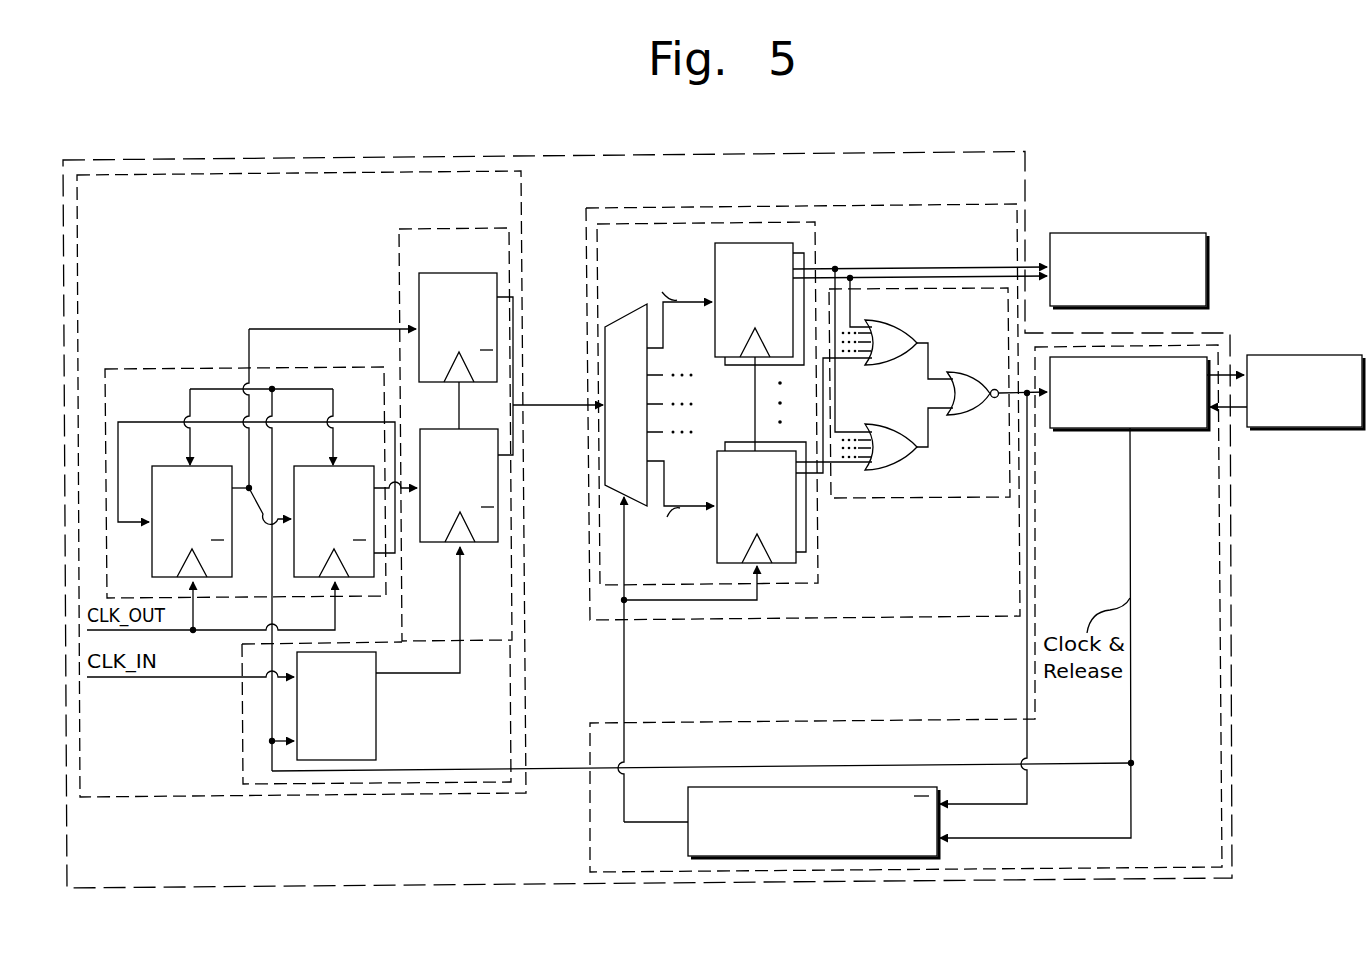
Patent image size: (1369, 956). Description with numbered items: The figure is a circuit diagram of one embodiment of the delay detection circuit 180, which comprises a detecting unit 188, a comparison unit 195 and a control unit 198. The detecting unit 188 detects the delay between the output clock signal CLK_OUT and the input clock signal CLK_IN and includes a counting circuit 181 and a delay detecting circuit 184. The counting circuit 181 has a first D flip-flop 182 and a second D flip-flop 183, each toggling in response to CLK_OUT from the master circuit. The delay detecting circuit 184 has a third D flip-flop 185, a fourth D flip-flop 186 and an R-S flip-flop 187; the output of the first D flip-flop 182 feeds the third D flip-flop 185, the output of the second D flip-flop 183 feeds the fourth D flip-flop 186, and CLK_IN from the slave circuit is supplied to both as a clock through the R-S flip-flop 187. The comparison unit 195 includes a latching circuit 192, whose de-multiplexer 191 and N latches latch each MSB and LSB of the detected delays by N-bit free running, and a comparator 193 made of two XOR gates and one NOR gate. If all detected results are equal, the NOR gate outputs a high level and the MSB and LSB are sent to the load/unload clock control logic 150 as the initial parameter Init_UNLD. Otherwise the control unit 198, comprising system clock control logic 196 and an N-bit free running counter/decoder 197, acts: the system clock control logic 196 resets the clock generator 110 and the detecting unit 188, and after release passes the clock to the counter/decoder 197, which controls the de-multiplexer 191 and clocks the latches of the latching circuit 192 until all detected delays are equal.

The clock generator 110 is at (1303, 355).
The load/unload clock control logic 150 is at (1128, 233).
The delay detection circuit 180 is at (888, 152).
The counting circuit 181 is at (149, 368).
The first D flip-flop 182 is at (203, 466).
The second D flip-flop 183 is at (345, 466).
The delay detecting circuit 184 is at (452, 229).
The third D flip-flop 185 is at (473, 273).
The fourth D flip-flop 186 is at (470, 429).
The R-S flip-flop 187 is at (376, 731).
The detecting unit 188 is at (398, 793).
The de-multiplexer 191 is at (605, 333).
The latching circuit 192 is at (813, 244).
The comparator 193 is at (927, 498).
The comparison unit 195 is at (835, 619).
The system clock control logic 196 is at (1088, 428).
The N-bit free running counter/decoder 197 is at (847, 787).
The control unit 198 is at (925, 723).